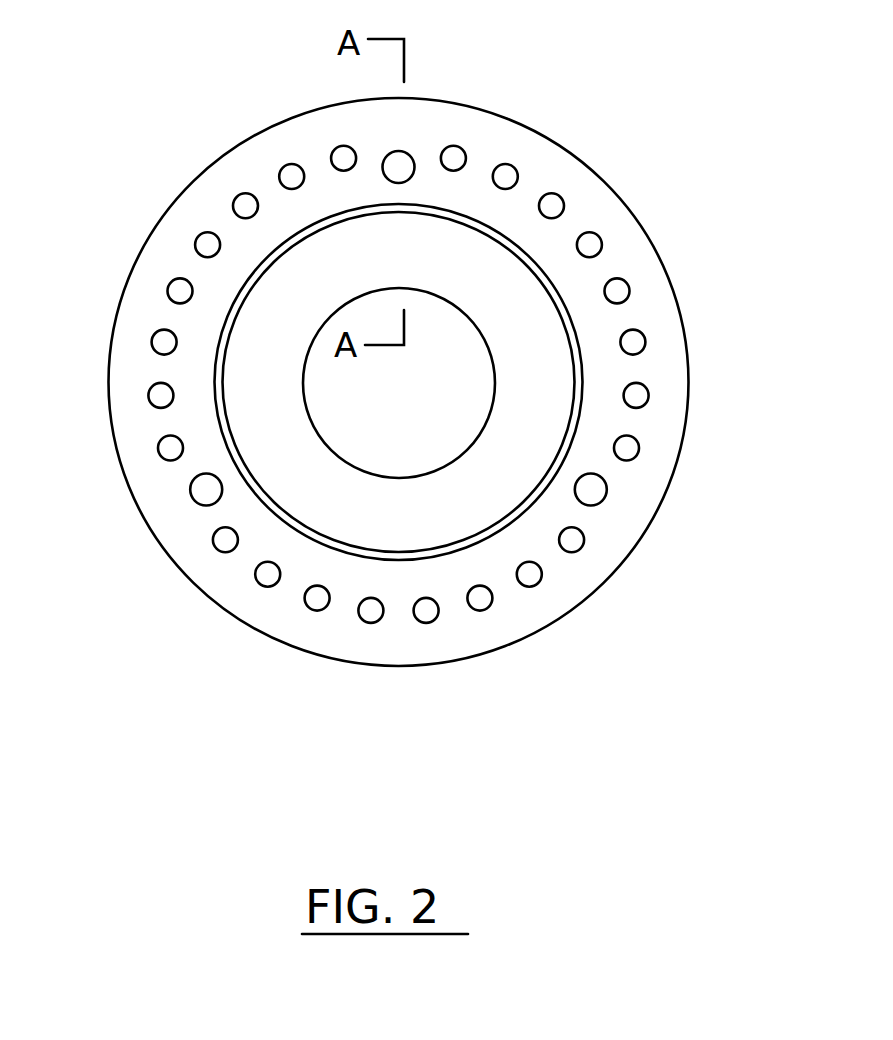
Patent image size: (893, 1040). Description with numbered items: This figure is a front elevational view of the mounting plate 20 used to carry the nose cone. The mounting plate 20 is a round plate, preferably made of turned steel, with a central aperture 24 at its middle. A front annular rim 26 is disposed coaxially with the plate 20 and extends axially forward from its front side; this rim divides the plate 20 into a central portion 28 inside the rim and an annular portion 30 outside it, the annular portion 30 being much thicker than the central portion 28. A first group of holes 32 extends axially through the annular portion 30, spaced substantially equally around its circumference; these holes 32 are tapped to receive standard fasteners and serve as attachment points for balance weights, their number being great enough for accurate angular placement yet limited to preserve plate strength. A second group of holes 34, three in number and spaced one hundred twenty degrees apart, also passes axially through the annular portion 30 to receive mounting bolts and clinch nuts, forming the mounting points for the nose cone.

The mounting plate 20 is at (664, 263).
The central aperture 24 is at (454, 406).
The front annular rim 26 is at (258, 268).
The central portion 28 is at (490, 514).
The annular portion 30 is at (673, 374).
The first group of holes 32 is at (582, 550).
The second group of holes 34 is at (191, 494).